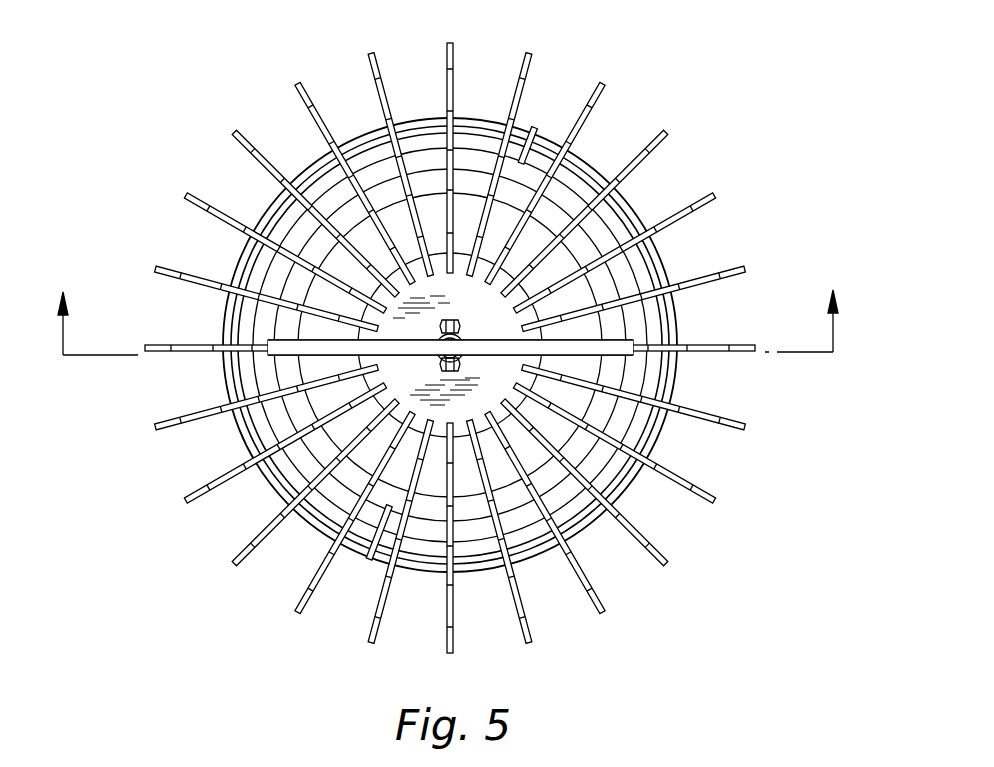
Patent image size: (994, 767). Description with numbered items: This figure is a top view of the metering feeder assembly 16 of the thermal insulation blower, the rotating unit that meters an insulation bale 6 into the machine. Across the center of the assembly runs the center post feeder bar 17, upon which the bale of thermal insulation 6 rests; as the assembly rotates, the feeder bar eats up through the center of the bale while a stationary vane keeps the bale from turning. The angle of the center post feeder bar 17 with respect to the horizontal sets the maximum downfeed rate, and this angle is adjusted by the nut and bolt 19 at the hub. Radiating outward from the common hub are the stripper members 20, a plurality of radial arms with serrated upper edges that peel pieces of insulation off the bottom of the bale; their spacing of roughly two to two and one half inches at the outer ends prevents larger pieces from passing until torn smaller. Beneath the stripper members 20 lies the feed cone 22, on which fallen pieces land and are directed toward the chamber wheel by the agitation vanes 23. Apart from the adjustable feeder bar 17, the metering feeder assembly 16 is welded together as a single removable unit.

The metering feeder assembly 16 is at (665, 78).
The center post feeder bar 17 is at (283, 357).
The nut and bolt 19 is at (466, 325).
The stripper members 20 is at (331, 127).
The feed cone 22 is at (247, 442).
The agitation vanes 23 is at (527, 140).
The bale of thermal insulation 6 is at (448, 322).